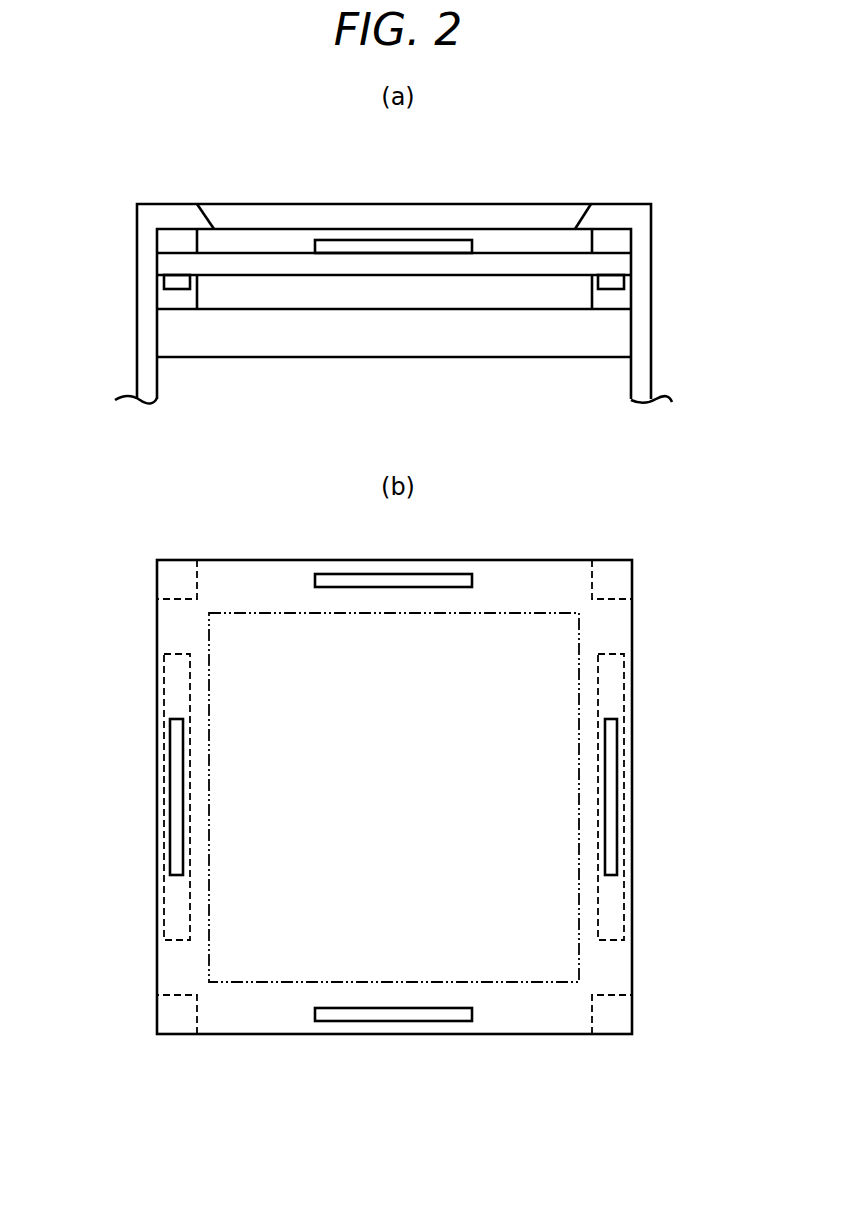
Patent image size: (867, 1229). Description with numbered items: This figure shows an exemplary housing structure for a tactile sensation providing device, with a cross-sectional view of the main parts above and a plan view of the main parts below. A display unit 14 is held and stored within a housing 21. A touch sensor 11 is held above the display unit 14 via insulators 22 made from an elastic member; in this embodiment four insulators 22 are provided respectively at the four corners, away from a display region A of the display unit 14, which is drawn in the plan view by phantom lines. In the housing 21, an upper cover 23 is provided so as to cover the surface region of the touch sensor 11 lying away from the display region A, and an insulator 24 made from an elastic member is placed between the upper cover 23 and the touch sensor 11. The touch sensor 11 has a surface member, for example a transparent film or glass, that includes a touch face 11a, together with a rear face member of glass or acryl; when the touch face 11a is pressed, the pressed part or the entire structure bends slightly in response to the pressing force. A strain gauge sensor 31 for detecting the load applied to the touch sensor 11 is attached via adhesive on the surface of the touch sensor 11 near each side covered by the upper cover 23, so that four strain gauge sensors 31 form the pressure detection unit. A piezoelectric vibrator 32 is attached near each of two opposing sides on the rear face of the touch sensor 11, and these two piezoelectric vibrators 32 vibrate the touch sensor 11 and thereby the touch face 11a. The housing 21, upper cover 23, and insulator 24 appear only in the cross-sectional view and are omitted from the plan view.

The touch sensor 11 is at (230, 268).
The touch face 11a is at (282, 248).
The display unit 14 is at (187, 330).
The housing 21 is at (643, 339).
The insulator 22 is at (165, 298).
The upper cover 23 is at (603, 218).
The insulator 24 is at (620, 230).
The strain gauge sensor 31 is at (421, 242).
The piezoelectric vibrator 32 is at (163, 277).
The display region A is at (208, 634).